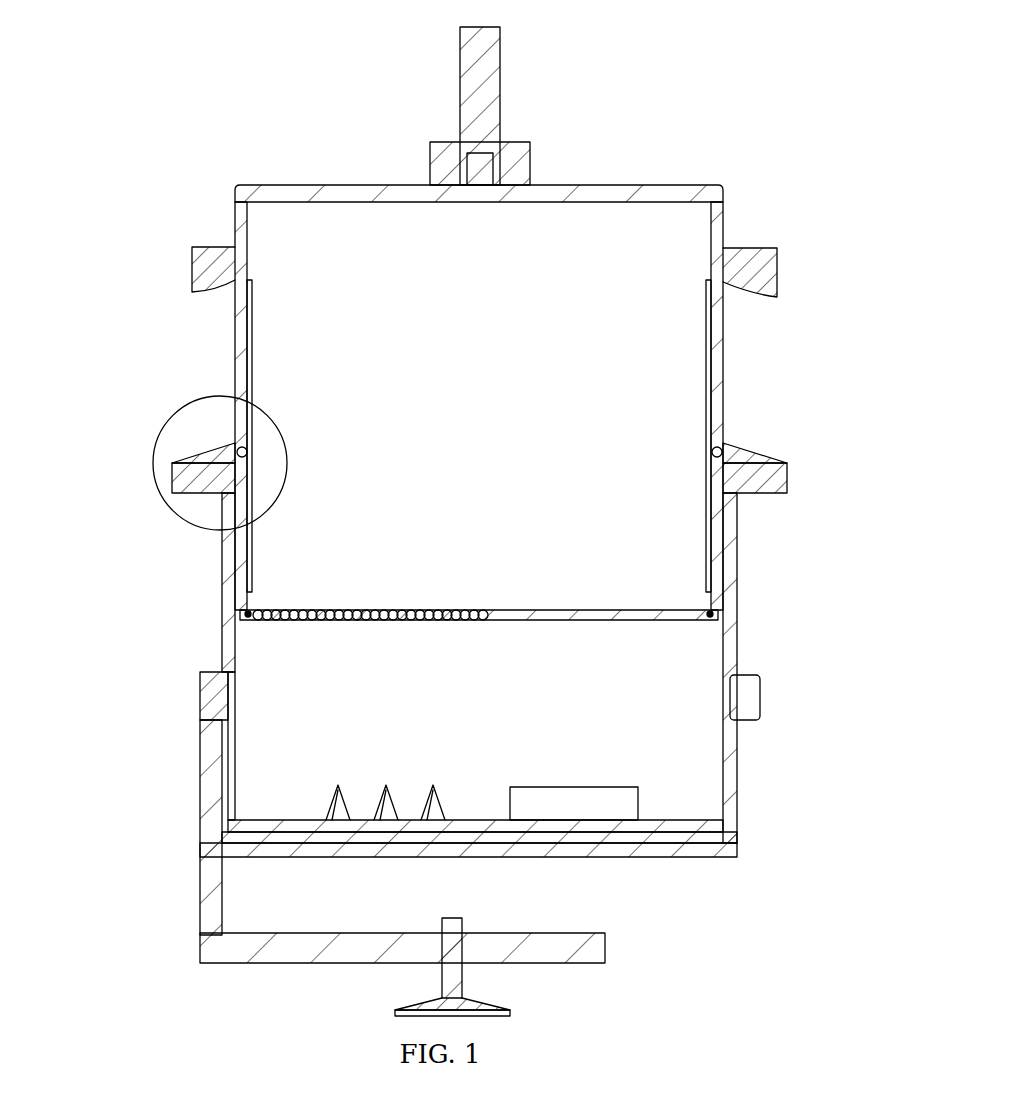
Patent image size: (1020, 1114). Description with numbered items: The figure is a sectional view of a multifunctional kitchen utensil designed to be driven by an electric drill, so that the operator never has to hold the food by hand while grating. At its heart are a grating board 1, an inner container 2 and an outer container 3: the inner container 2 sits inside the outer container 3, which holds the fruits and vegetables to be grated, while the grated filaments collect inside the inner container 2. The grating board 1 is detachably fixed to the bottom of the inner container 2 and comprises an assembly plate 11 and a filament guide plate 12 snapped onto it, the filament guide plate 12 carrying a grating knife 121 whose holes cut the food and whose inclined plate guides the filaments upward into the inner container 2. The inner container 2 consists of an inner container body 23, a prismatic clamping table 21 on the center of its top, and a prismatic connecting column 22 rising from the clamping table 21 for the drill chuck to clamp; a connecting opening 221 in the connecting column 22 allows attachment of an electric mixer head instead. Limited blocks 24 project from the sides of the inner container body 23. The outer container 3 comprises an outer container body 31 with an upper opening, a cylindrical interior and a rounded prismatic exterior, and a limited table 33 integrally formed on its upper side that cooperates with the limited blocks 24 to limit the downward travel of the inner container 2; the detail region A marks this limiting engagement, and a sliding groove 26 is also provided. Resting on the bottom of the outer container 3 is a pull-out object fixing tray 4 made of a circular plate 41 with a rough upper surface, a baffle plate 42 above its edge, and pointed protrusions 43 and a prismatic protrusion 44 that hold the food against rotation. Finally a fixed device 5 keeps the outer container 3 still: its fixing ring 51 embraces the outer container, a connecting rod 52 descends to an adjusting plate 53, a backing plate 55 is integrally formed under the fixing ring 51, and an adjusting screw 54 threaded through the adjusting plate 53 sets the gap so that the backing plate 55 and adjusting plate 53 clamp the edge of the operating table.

The grating board 1 is at (489, 574).
The assembly plate 11 is at (505, 612).
The filament guide plate 12 is at (375, 612).
The grating knife 121 is at (248, 614).
The inner container 2 is at (595, 463).
The clamping table 21 is at (517, 165).
The connecting column 22 is at (480, 107).
The connecting opening 221 is at (480, 178).
The inner container body 23 is at (275, 192).
The limited blocks 24 is at (207, 265).
The sliding groove 26 is at (242, 358).
The outer container 3 is at (585, 703).
The outer container body 31 is at (235, 580).
The limited table 33 is at (192, 478).
The detail region A is at (207, 428).
The object fixing tray 4 is at (582, 778).
The circular plate 41 is at (538, 827).
The baffle plate 42 is at (735, 800).
The pointed protrusion 43 is at (450, 800).
The prismatic protrusion 44 is at (585, 803).
The fixed device 5 is at (375, 844).
The fixing ring 51 is at (212, 705).
The connecting rod 52 is at (212, 885).
The adjusting plate 53 is at (290, 945).
The adjusting screw 54 is at (448, 975).
The backing plate 55 is at (258, 845).